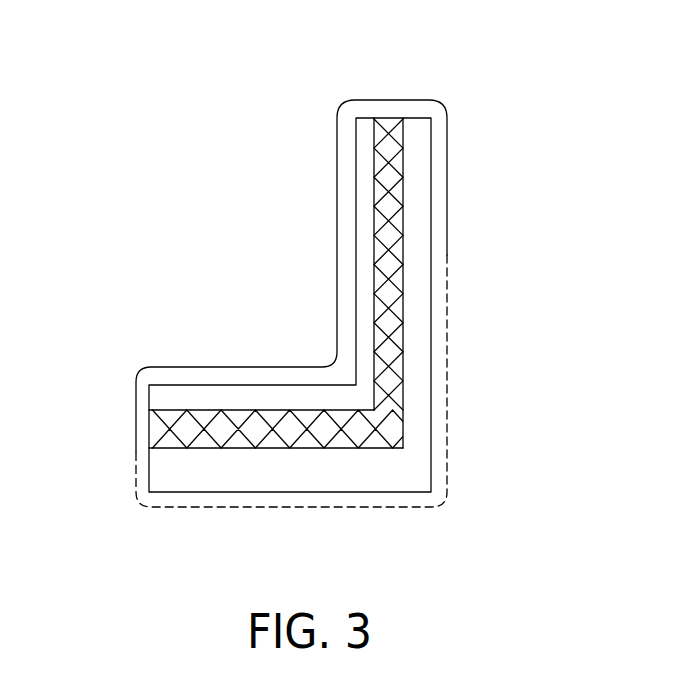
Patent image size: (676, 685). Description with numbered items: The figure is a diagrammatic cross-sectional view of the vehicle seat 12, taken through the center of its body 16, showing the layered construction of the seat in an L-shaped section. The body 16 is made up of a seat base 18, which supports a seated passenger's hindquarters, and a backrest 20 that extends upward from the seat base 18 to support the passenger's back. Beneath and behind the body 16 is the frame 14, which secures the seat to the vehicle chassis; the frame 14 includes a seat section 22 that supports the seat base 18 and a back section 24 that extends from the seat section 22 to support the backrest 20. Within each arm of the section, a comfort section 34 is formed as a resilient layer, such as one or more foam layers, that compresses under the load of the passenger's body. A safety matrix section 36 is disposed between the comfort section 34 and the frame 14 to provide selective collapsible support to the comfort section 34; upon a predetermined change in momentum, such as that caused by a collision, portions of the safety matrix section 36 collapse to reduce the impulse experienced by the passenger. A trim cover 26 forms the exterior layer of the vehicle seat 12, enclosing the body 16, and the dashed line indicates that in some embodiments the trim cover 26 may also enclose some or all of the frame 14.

The vehicle seat 12 is at (505, 103).
The frame 14 is at (270, 503).
The body 16 is at (233, 178).
The seat base 18 is at (205, 338).
The backrest 20 is at (317, 177).
The seat section 22 is at (197, 472).
The back section 24 is at (415, 292).
The trim cover 26 is at (447, 199).
The comfort section 34 is at (321, 394).
The safety matrix section 36 is at (173, 433).